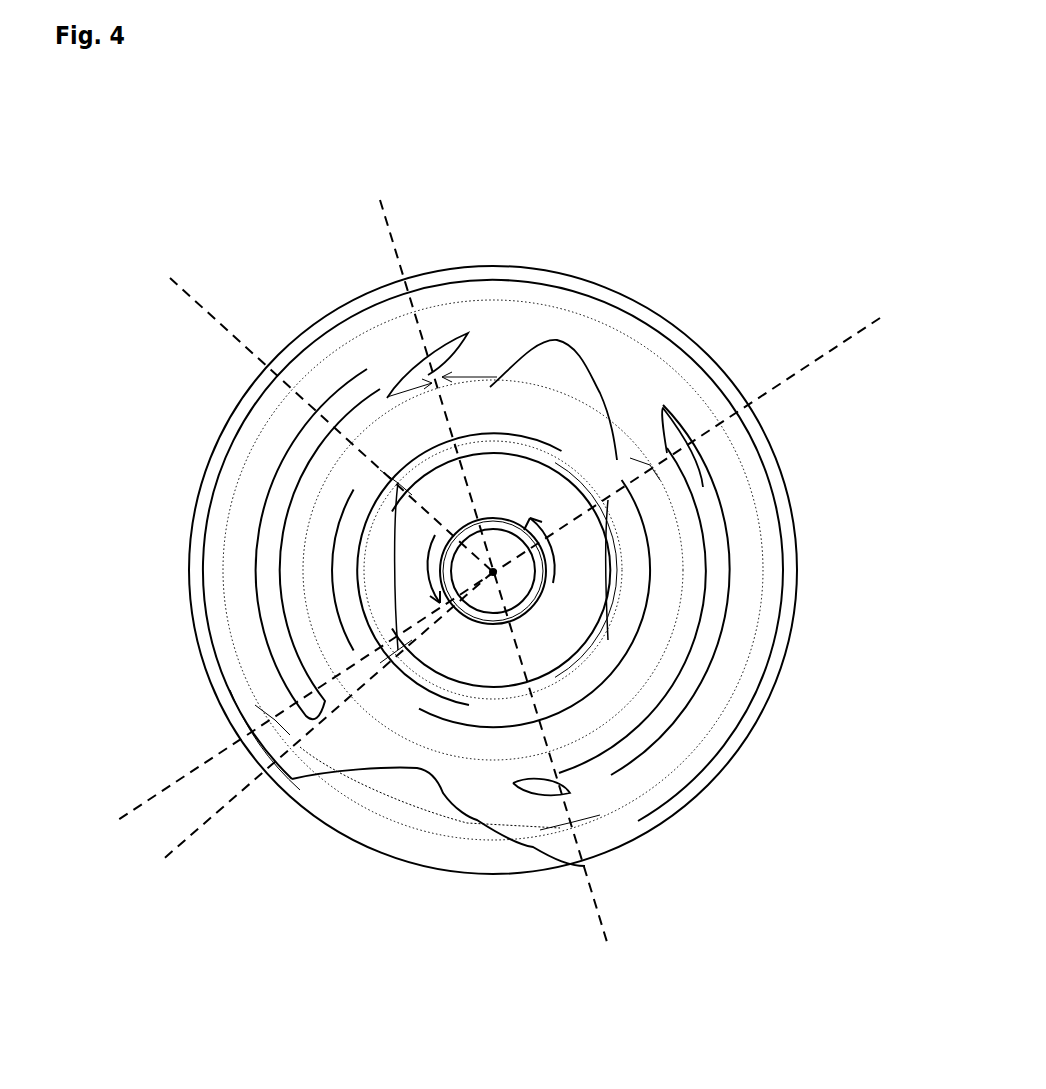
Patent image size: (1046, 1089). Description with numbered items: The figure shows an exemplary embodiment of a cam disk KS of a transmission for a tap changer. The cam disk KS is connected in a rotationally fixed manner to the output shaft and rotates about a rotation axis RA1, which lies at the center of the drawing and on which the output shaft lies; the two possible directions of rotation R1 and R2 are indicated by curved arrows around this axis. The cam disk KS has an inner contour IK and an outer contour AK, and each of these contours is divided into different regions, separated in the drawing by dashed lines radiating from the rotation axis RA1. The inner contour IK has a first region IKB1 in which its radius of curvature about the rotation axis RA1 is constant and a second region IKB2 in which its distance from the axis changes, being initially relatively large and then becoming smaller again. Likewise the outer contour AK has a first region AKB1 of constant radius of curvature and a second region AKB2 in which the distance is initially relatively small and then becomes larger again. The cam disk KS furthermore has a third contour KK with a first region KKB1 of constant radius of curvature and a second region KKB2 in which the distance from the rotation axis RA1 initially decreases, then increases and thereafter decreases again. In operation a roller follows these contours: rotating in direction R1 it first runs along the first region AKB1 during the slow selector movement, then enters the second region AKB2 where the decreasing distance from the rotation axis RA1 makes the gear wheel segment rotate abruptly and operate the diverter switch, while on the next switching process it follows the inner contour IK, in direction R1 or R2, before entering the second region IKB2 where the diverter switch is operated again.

The cam disk KS is at (201, 157).
The outer contour AK is at (280, 432).
The inner contour IK is at (320, 513).
The third contour KK is at (610, 639).
The first region of the outer contour AKB1 is at (242, 668).
The second region of the outer contour AKB2 is at (367, 787).
The first region of the inner contour IKB1 is at (400, 398).
The second region of the inner contour IKB2 is at (572, 404).
The first region of the third contour KKB1 is at (622, 577).
The second region of the third contour KKB2 is at (370, 560).
The rotation axis RA1 is at (493, 572).
The direction of rotation R1 is at (556, 550).
The direction of rotation R2 is at (419, 569).